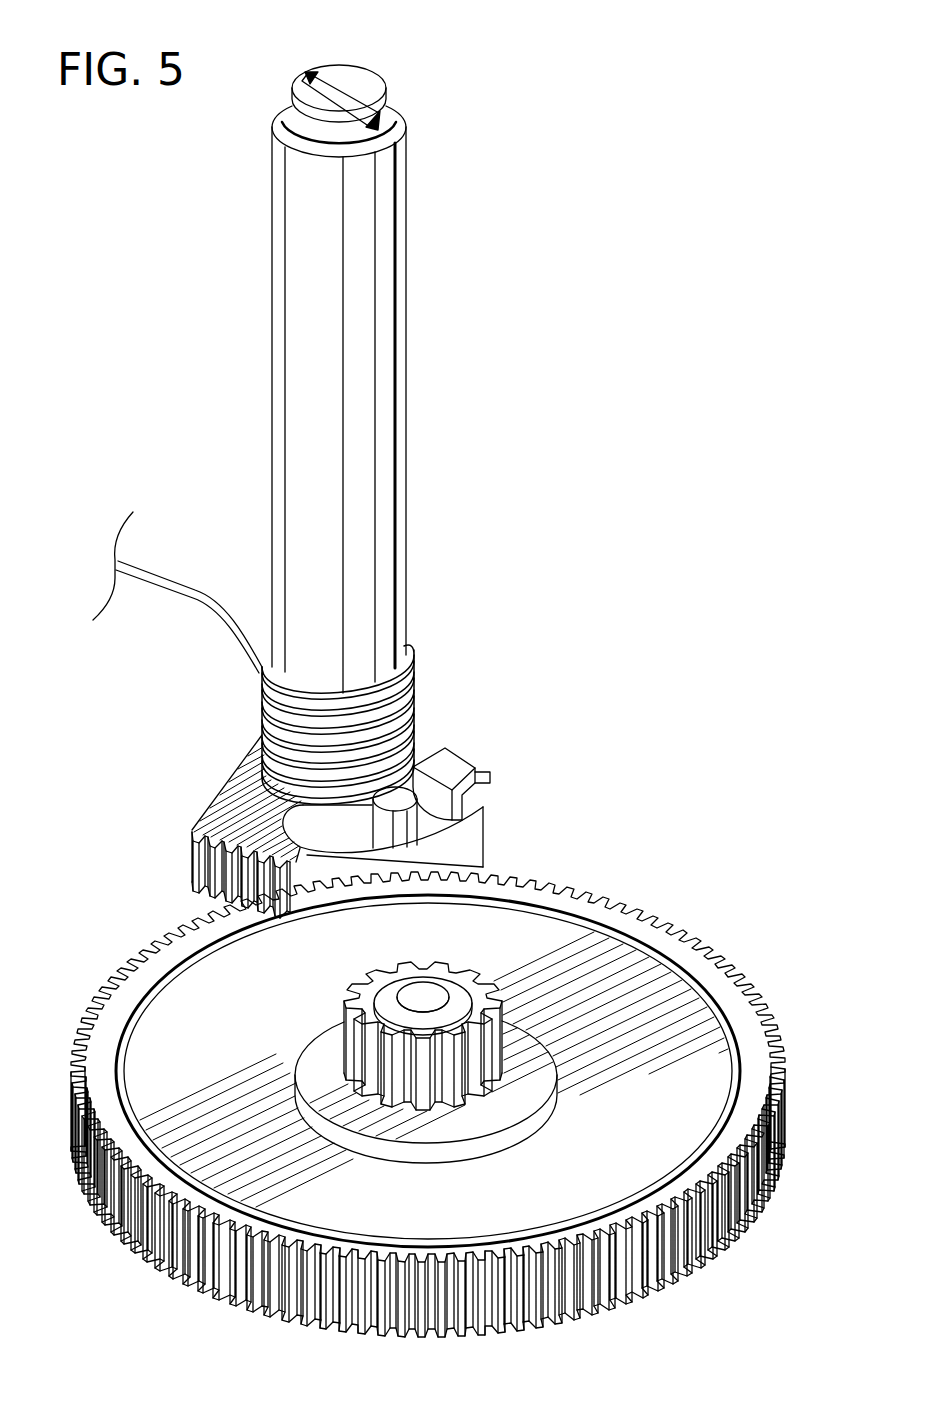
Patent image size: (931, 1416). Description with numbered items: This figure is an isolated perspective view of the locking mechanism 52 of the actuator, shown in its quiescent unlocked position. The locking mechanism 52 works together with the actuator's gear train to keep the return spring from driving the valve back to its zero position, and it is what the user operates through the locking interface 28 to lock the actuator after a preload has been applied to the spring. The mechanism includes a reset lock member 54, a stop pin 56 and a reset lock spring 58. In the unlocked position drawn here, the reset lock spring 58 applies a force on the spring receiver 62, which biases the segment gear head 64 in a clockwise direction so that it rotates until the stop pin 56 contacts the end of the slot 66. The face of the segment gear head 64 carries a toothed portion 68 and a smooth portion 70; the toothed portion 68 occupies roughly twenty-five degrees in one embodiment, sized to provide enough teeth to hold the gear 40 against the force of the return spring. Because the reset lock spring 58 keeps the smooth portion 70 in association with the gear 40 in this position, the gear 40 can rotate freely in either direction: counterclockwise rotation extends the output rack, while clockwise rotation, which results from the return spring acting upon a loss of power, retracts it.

The locking interface 28 is at (343, 73).
The gear 40 is at (682, 948).
The locking mechanism 52 is at (140, 342).
The reset lock member 54 is at (388, 346).
The stop pin 56 is at (397, 828).
The reset lock spring 58 is at (409, 681).
The spring receiver 62 is at (443, 762).
The segment gear head 64 is at (240, 784).
The slot 66 is at (310, 819).
The toothed portion 68 is at (207, 867).
The smooth portion 70 is at (477, 833).